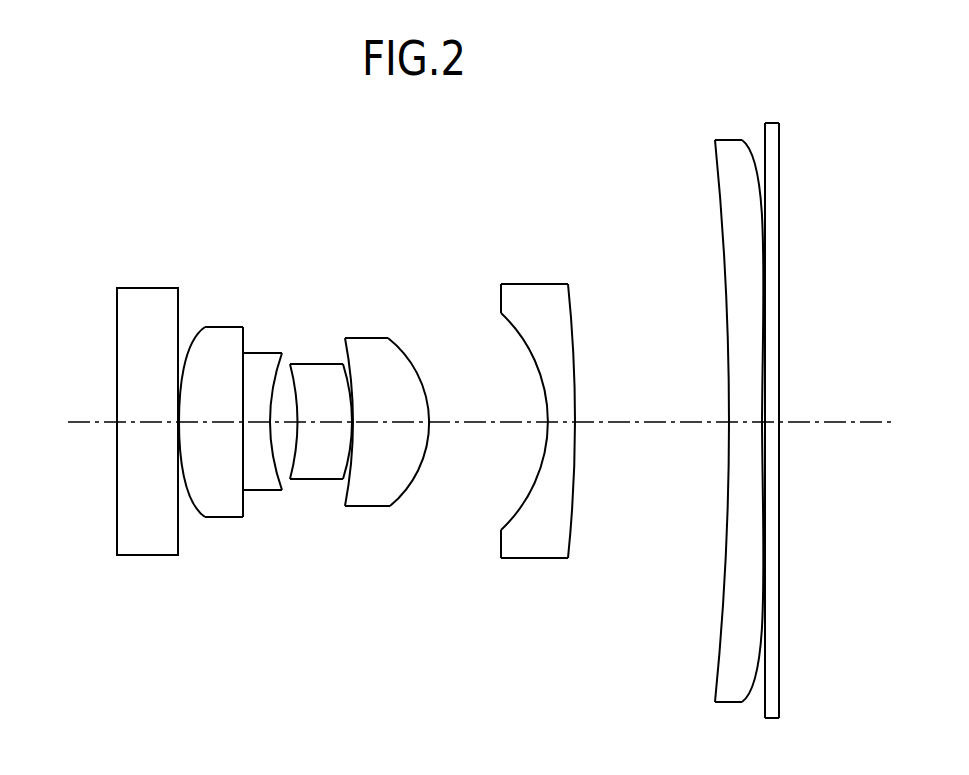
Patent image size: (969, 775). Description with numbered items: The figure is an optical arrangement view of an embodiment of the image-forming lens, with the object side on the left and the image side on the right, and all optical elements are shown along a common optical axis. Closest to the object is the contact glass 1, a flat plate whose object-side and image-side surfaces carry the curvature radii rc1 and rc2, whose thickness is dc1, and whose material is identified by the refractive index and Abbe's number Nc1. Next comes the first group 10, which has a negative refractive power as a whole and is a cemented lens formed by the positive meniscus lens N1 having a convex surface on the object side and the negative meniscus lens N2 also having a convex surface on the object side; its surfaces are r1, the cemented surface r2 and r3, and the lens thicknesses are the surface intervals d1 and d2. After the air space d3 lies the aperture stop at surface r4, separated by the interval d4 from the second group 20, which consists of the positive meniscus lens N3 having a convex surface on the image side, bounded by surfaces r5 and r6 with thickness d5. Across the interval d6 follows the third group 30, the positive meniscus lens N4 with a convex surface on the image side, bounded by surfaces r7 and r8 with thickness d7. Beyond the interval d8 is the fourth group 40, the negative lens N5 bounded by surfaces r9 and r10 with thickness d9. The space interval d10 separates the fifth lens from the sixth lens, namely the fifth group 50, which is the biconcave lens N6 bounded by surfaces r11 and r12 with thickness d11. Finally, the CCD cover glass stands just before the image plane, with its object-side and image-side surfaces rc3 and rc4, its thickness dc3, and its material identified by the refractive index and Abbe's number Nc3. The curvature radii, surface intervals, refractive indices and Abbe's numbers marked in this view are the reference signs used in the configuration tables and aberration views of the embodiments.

The contact glass 1 is at (145, 300).
The first group 10 is at (243, 446).
The second group 20 is at (337, 440).
The third group 30 is at (407, 455).
The fourth group 40 is at (539, 455).
The fifth group 50 is at (692, 405).
The curvature radius of object side of contact glass rc1 is at (117, 317).
The curvature radius of image side of contact glass rc2 is at (181, 300).
The curvature radius of object side of CCD cover glass rc3 is at (763, 145).
The curvature radius of image side of CCD cover glass rc4 is at (780, 150).
The curvature radius of first lens surface r1 is at (182, 357).
The curvature radius of second lens surface r2 is at (240, 380).
The curvature radius of third lens surface r3 is at (275, 368).
The curvature radius of fourth lens surface r4 is at (292, 365).
The curvature radius of fifth lens surface r5 is at (300, 403).
The curvature radius of sixth lens surface r6 is at (353, 395).
The curvature radius of seventh lens surface r7 is at (346, 358).
The curvature radius of eighth lens surface r8 is at (407, 353).
The curvature radius of ninth lens surface r9 is at (525, 350).
The curvature radius of tenth lens surface r10 is at (573, 342).
The curvature radius of eleventh lens surface r11 is at (715, 197).
The curvature radius of twelfth lens surface r12 is at (760, 187).
The thickness of contact glass dc1 is at (148, 409).
The thickness of CCD cover glass dc3 is at (770, 422).
The first surface interval d1 is at (211, 409).
The second surface interval d2 is at (253, 409).
The third surface interval d3 is at (286, 409).
The fourth surface interval d4 is at (298, 423).
The fifth surface interval d5 is at (325, 409).
The sixth surface interval d6 is at (353, 407).
The seventh surface interval d7 is at (405, 411).
The eighth surface interval d8 is at (477, 408).
The ninth surface interval d9 is at (564, 408).
The space interval between fifth lens and sixth lens d10 is at (649, 408).
The eleventh surface interval d11 is at (745, 422).
The refractive index of contact glass Nc1 is at (147, 540).
The refractive index of CCD cover glass Nc3 is at (773, 655).
The positive meniscus lens N1 is at (218, 505).
The negative meniscus lens N2 is at (257, 500).
The positive meniscus lens N3 is at (329, 470).
The positive meniscus lens N4 is at (395, 483).
The negative lens N5 is at (533, 547).
The biconcave lens N6 is at (716, 720).